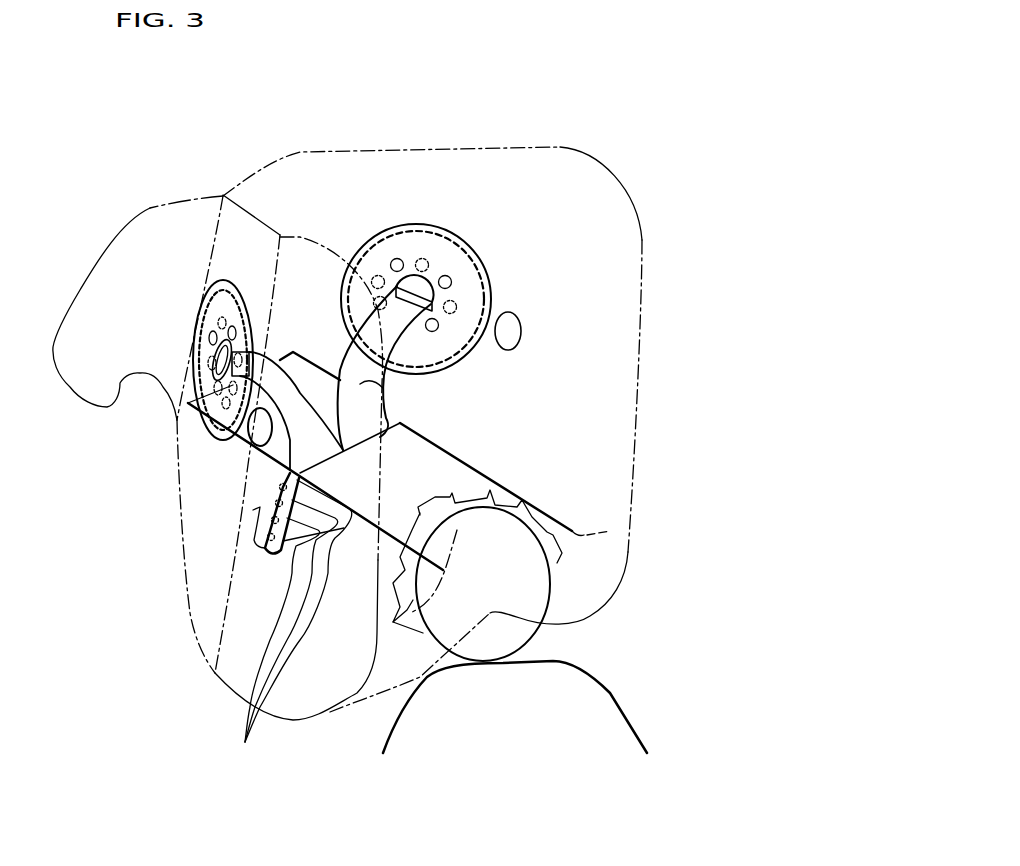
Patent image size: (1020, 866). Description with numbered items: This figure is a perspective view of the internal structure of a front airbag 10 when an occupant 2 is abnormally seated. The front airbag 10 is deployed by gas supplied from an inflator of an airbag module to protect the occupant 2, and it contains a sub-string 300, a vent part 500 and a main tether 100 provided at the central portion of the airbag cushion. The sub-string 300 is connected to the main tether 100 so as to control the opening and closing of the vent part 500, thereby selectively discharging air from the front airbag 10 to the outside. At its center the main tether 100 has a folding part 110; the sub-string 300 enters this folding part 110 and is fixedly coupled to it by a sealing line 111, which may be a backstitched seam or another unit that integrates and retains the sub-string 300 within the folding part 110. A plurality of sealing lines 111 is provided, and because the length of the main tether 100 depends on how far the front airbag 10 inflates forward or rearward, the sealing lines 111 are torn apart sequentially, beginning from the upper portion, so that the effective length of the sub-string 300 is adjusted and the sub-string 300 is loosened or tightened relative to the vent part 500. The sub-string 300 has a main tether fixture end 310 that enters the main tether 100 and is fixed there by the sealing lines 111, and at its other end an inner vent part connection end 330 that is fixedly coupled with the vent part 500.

The front airbag 10 is at (617, 166).
The occupant 2 is at (629, 703).
The main tether 100 is at (541, 495).
The folding part 110 is at (253, 510).
The sealing line 111 is at (286, 631).
The sub-string 300 is at (335, 345).
The main tether fixture end 310 is at (383, 386).
The inner vent part connection end 330 is at (393, 263).
The vent part 500 is at (463, 227).